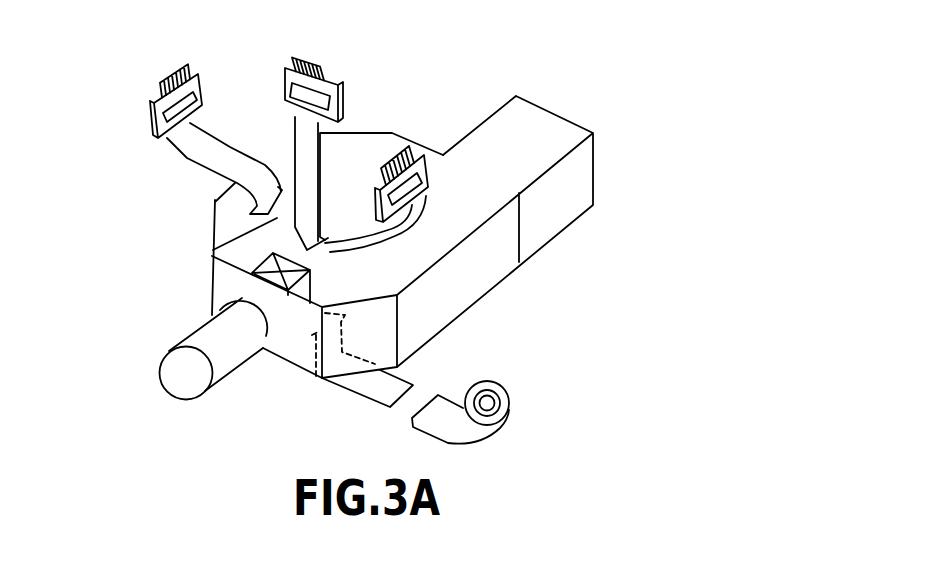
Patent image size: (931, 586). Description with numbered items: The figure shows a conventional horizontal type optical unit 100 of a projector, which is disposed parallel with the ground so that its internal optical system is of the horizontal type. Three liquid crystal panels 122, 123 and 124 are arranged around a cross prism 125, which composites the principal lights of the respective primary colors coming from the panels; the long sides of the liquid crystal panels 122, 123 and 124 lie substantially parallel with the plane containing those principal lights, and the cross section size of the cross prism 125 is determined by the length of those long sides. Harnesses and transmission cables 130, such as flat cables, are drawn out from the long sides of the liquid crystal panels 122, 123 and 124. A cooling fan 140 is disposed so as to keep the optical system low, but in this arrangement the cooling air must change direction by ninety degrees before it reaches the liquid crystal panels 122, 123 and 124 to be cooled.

The optical unit 100 is at (545, 77).
The liquid crystal panel 122 is at (427, 152).
The liquid crystal panel 123 is at (346, 101).
The liquid crystal panel 124 is at (152, 116).
The cross prism 125 is at (266, 262).
The transmission cables 130 is at (313, 61).
The cooling fan 140 is at (498, 393).